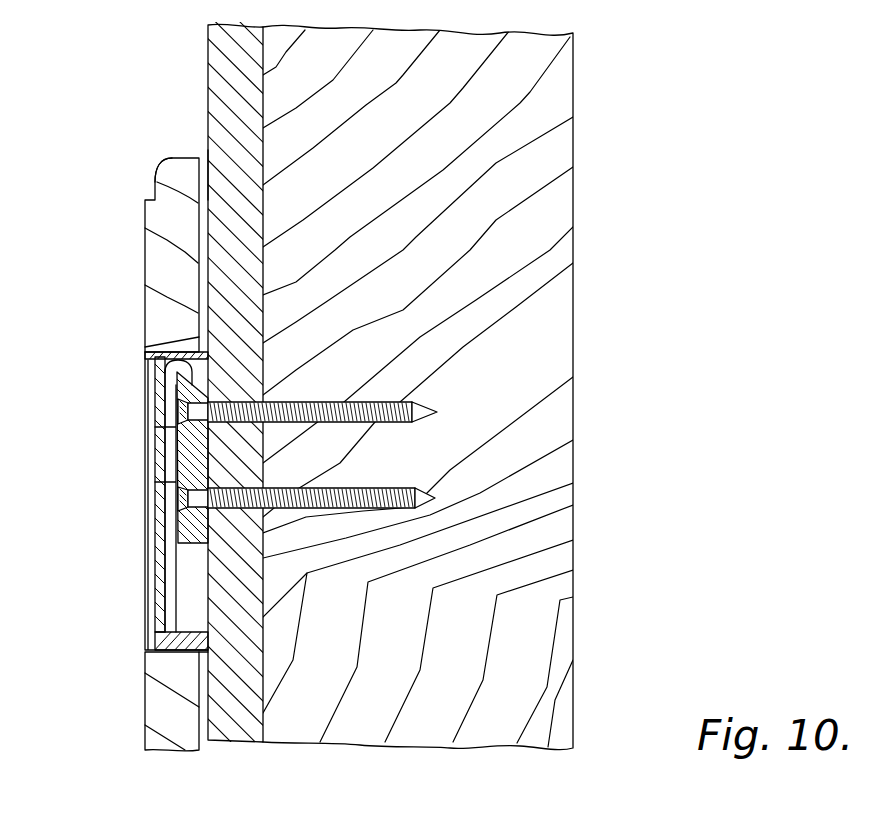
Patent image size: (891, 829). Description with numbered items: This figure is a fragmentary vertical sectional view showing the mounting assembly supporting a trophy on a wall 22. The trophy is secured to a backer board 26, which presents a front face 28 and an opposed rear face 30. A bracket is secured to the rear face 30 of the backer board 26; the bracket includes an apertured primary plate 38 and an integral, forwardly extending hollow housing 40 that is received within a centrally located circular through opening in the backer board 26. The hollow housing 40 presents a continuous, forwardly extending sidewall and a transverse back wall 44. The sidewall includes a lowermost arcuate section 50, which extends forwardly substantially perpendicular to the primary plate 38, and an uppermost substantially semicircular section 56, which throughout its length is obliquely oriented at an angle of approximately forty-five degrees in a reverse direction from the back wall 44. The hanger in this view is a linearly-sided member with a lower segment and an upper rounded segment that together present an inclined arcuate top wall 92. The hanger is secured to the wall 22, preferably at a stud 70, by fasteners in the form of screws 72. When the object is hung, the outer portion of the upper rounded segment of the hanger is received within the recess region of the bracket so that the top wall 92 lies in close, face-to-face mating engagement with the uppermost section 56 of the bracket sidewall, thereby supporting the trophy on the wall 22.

The wall 22 is at (237, 730).
The backer board 26 is at (160, 173).
The front face 28 is at (145, 230).
The rear face 30 is at (203, 176).
The primary plate 38 is at (203, 660).
The hollow housing 40 is at (167, 648).
The back wall 44 is at (160, 518).
The lowermost arcuate section 50 is at (187, 630).
The uppermost substantially semicircular section 56 is at (185, 385).
The stud 70 is at (553, 327).
The screws 72 is at (417, 500).
The inclined arcuate top wall 92 is at (180, 358).